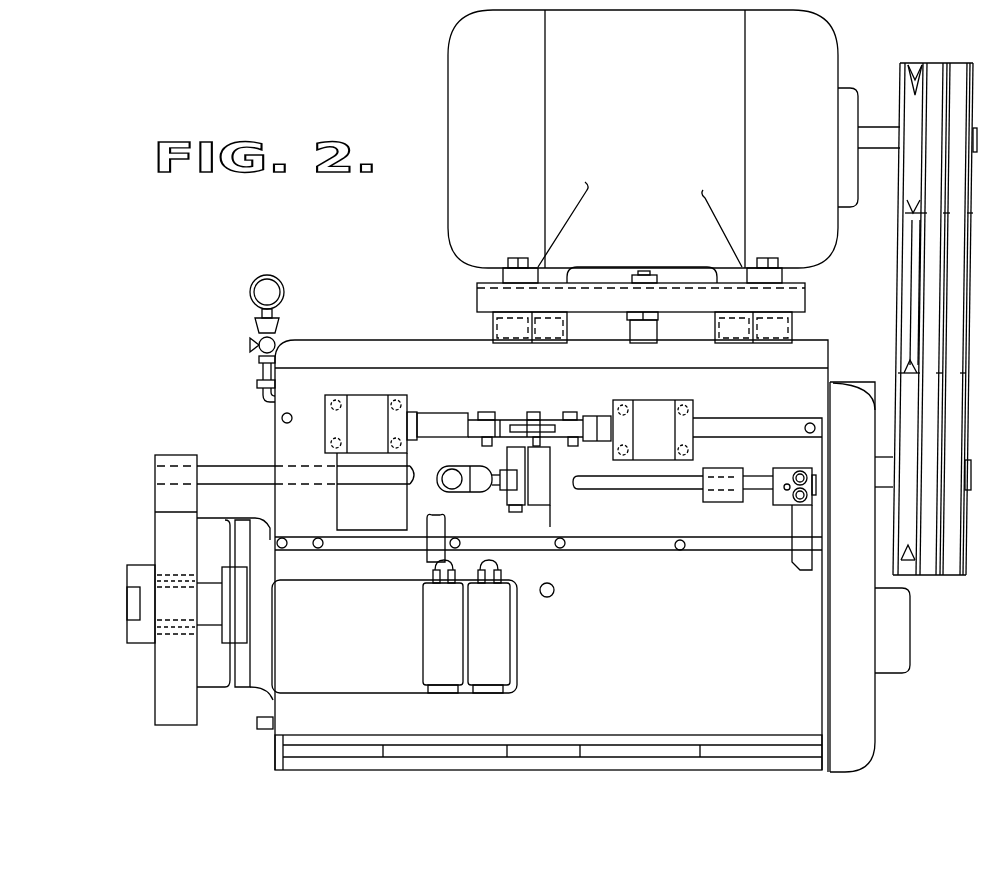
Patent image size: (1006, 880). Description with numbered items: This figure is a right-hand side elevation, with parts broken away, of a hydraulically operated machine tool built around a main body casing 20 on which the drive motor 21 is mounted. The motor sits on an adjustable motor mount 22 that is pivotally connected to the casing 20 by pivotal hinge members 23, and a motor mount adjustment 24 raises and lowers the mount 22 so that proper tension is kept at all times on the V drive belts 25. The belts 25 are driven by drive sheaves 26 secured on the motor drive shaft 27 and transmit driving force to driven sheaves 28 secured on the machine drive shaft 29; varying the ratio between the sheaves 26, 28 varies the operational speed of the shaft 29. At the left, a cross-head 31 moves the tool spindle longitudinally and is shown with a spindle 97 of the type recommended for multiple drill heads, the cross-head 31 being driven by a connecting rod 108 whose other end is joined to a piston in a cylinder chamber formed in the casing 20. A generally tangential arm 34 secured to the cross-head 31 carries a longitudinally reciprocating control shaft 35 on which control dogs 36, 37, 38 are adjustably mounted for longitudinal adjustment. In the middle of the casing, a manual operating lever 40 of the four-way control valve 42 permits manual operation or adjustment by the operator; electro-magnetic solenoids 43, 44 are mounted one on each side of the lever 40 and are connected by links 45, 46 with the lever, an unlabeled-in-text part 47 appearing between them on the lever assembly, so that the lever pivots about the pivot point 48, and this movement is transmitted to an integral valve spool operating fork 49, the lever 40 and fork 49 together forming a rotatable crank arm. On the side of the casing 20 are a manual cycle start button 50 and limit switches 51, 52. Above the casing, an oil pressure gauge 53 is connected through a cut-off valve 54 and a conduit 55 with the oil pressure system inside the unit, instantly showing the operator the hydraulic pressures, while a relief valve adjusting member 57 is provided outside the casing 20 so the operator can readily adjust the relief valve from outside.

The main body casing 20 is at (365, 352).
The drive motor 21 is at (447, 207).
The adjustable motor mount 22 is at (477, 290).
The pivotal hinge members 23 is at (493, 327).
The motor mount adjustment 24 is at (647, 330).
The V drive belts 25 is at (950, 258).
The drive sheaves 26 is at (972, 63).
The motor drive shaft 27 is at (875, 148).
The driven sheaves 28 is at (905, 374).
The machine drive shaft 29 is at (885, 487).
The cross-head 31 is at (157, 662).
The tangential arm 34 is at (155, 480).
The control shaft 35 is at (222, 478).
The control dog 36 is at (445, 532).
The control dog 37 is at (705, 490).
The control dog 38 is at (790, 520).
The manual operating lever 40 is at (550, 418).
The four-way control valve 42 is at (432, 490).
The electro-magnetic solenoid 43 is at (376, 432).
The electro-magnetic solenoid 44 is at (663, 437).
The link 45 is at (478, 412).
The link 46 is at (590, 414).
The clamp 47 is at (533, 412).
The pivot point 48 is at (552, 510).
The valve spool operating fork 49 is at (492, 497).
The manual cycle start button 50 is at (555, 590).
The limit switch 51 is at (452, 643).
The limit switch 52 is at (495, 643).
The oil pressure gauge 53 is at (250, 292).
The cut-off valve 54 is at (250, 341).
The conduit 55 is at (257, 386).
The relief valve adjusting member 57 is at (255, 728).
The spindle 97 is at (133, 645).
The connecting rod 108 is at (215, 600).